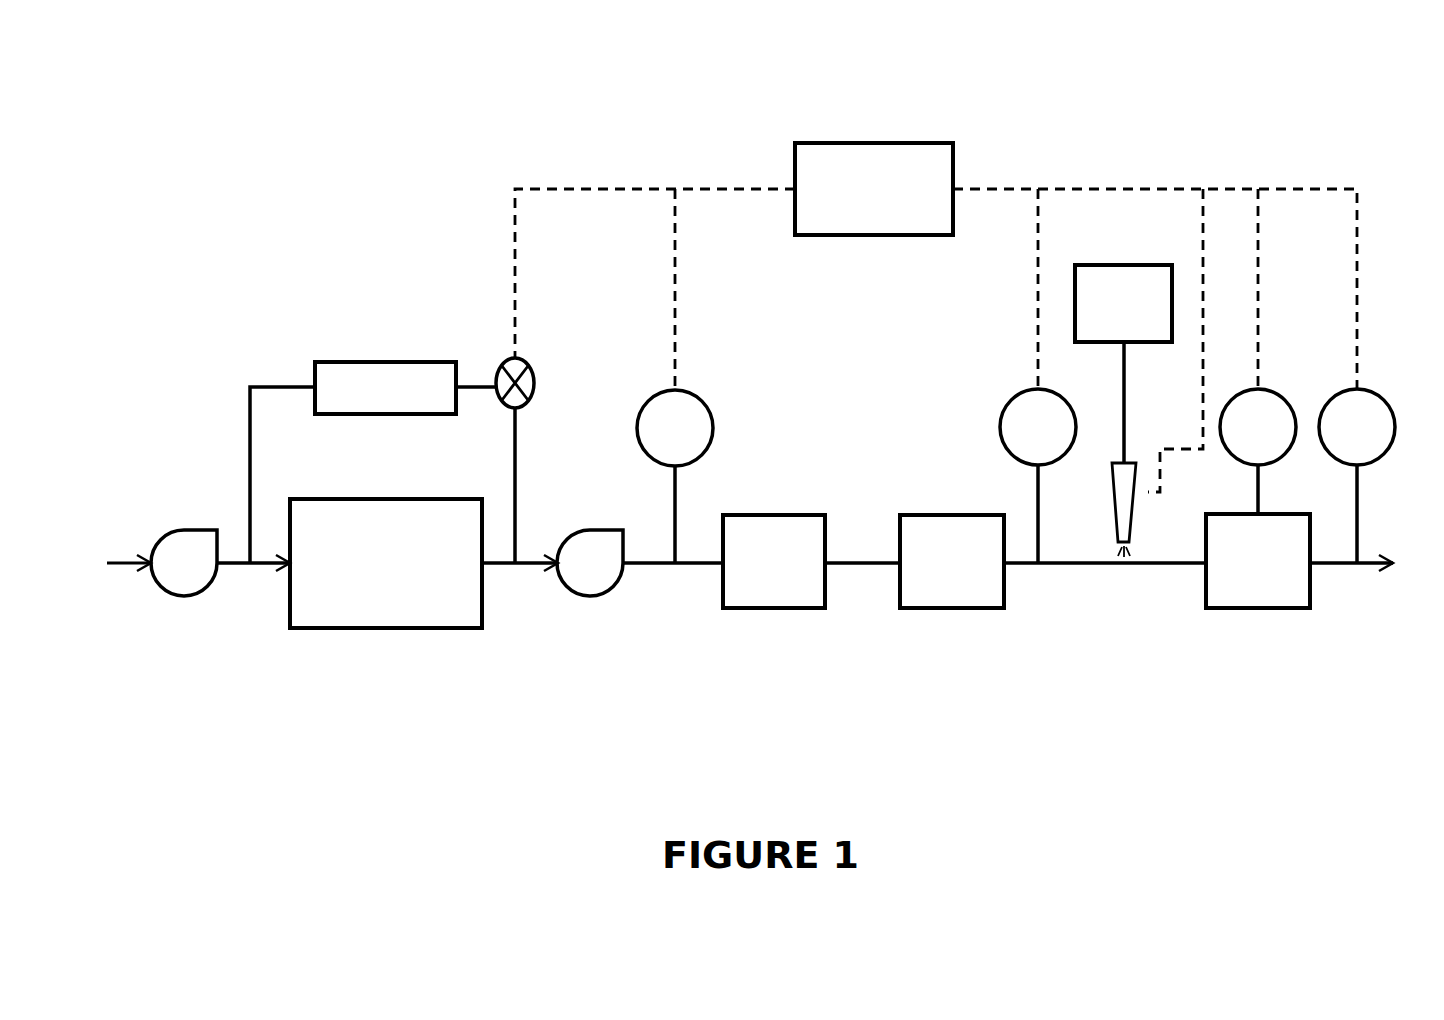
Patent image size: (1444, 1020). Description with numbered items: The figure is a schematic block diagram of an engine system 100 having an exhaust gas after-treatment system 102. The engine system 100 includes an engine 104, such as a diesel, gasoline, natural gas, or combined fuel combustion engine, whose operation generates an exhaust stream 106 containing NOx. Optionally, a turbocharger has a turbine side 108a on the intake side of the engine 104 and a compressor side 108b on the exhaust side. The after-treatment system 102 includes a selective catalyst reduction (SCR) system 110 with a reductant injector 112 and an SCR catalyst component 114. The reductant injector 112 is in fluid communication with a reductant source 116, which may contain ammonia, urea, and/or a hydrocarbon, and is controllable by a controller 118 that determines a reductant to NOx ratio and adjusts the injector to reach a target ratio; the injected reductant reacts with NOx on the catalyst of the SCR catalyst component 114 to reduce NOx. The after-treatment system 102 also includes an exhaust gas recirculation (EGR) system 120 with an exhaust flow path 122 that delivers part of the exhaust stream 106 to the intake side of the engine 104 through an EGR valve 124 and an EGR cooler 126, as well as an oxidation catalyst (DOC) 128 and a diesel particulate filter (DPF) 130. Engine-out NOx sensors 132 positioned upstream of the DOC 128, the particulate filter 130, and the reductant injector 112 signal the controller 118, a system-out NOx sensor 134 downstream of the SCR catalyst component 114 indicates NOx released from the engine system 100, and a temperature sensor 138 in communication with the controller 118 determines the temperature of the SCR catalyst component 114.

The engine system 100 is at (365, 127).
The exhaust gas after-treatment system 102 is at (1000, 692).
The engine 104 is at (335, 615).
The exhaust stream 106 is at (492, 568).
The turbine side 108a is at (180, 590).
The compressor side 108b is at (588, 597).
The selective catalyst reduction (SCR) system 110 is at (1175, 602).
The reductant injector 112 is at (1112, 478).
The SCR catalyst component 114 is at (1242, 608).
The reductant source 116 is at (1085, 265).
The controller 118 is at (855, 143).
The exhaust gas recirculation (EGR) system 120 is at (433, 298).
The exhaust flow path 122 is at (518, 487).
The EGR valve 124 is at (550, 352).
The EGR cooler 126 is at (336, 372).
The oxidation catalyst (DOC) 128 is at (733, 608).
The diesel particulate filter (DPF) 130 is at (915, 608).
The engine-out NOx sensor 132 is at (706, 400).
The system-out NOx sensor 134 is at (1385, 395).
The temperature sensor 138 is at (1280, 395).